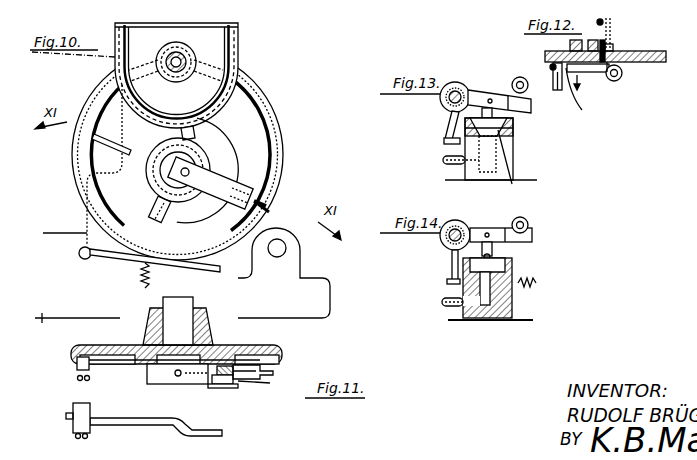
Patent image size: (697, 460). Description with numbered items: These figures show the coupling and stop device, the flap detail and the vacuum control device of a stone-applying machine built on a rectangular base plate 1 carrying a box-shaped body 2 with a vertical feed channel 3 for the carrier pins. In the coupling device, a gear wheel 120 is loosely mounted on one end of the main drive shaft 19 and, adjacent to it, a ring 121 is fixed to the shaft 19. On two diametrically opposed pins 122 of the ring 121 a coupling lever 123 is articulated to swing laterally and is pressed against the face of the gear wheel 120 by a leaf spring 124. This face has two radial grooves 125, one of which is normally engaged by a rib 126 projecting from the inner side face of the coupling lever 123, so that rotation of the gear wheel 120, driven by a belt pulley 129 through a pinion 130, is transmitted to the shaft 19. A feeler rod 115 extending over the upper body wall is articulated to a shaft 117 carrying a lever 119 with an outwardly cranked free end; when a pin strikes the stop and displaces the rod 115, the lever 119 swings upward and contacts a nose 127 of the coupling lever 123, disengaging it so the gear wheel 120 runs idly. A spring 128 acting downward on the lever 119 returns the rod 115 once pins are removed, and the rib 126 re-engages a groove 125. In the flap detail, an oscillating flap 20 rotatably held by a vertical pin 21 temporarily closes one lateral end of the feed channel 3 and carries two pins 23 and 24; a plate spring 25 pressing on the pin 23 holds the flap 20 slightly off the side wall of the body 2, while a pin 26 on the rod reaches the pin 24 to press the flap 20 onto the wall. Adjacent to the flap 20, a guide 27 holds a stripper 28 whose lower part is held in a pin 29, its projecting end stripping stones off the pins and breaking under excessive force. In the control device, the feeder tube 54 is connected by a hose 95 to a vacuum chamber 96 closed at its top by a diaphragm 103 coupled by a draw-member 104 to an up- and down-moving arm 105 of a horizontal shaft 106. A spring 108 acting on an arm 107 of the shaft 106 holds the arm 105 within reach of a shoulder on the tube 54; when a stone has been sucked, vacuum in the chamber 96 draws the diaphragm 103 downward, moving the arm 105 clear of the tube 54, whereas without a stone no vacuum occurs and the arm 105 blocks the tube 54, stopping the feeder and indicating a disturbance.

In FIG. 11, the base plate 1 is at (77, 325).
In FIG. 12, the body 2 is at (651, 53).
In FIG. 12, the feed channel 3 is at (568, 46).
In FIG. 10, the main drive shaft 19 is at (161, 153).
In FIG. 11, the main drive shaft 19 is at (195, 298).
In FIG. 12, the oscillating flap 20 is at (598, 73).
In FIG. 12, the vertical pin 21 is at (623, 77).
In FIG. 12, the pin 23 is at (605, 74).
In FIG. 12, the pin 24 is at (613, 30).
In FIG. 12, the plate spring 25 is at (614, 47).
In FIG. 12, the pin 26 is at (599, 19).
In FIG. 12, the guide 27 is at (550, 68).
In FIG. 12, the stripper 28 is at (579, 100).
In FIG. 12, the pin 29 is at (556, 92).
In FIG. 13, the tube 54 is at (512, 79).
In FIG. 14, the tube 54 is at (517, 220).
In FIG. 13, the hose 95 is at (443, 160).
In FIG. 14, the hose 95 is at (442, 303).
In FIG. 13, the vacuum chamber 96 is at (513, 134).
In FIG. 14, the vacuum chamber 96 is at (505, 280).
In FIG. 13, the diaphragm 103 is at (517, 164).
In FIG. 14, the diaphragm 103 is at (494, 252).
In FIG. 13, the draw-member 104 is at (493, 114).
In FIG. 13, the arm 105 is at (512, 100).
In FIG. 14, the arm 105 is at (532, 236).
In FIG. 13, the horizontal shaft 106 is at (456, 91).
In FIG. 14, the horizontal shaft 106 is at (457, 230).
In FIG. 13, the arm 107 is at (451, 126).
In FIG. 14, the arm 107 is at (452, 264).
In FIG. 13, the spring 108 is at (448, 142).
In FIG. 14, the spring 108 is at (537, 283).
In FIG. 10, the feeler rod 115 is at (113, 188).
In FIG. 10, the shaft 117 is at (80, 258).
In FIG. 11, the shaft 117 is at (86, 338).
In FIG. 10, the lever 119 is at (124, 264).
In FIG. 11, the lever 119 is at (122, 366).
In FIG. 10, the gear wheel 120 is at (272, 130).
In FIG. 11, the gear wheel 120 is at (283, 351).
In FIG. 10, the ring 121 is at (218, 161).
In FIG. 11, the ring 121 is at (160, 380).
In FIG. 10, the pins 122 is at (250, 98).
In FIG. 10, the coupling lever 123 is at (228, 169).
In FIG. 11, the coupling lever 123 is at (233, 388).
In FIG. 10, the leaf spring 124 is at (217, 199).
In FIG. 11, the leaf spring 124 is at (222, 385).
In FIG. 10, the radial grooves 125 is at (93, 146).
In FIG. 11, the rib 126 is at (247, 368).
In FIG. 10, the nose 127 is at (264, 209).
In FIG. 11, the nose 127 is at (263, 383).
In FIG. 10, the spring 128 is at (150, 282).
In FIG. 10, the belt pulley 129 is at (240, 58).
In FIG. 10, the pinion 130 is at (188, 57).